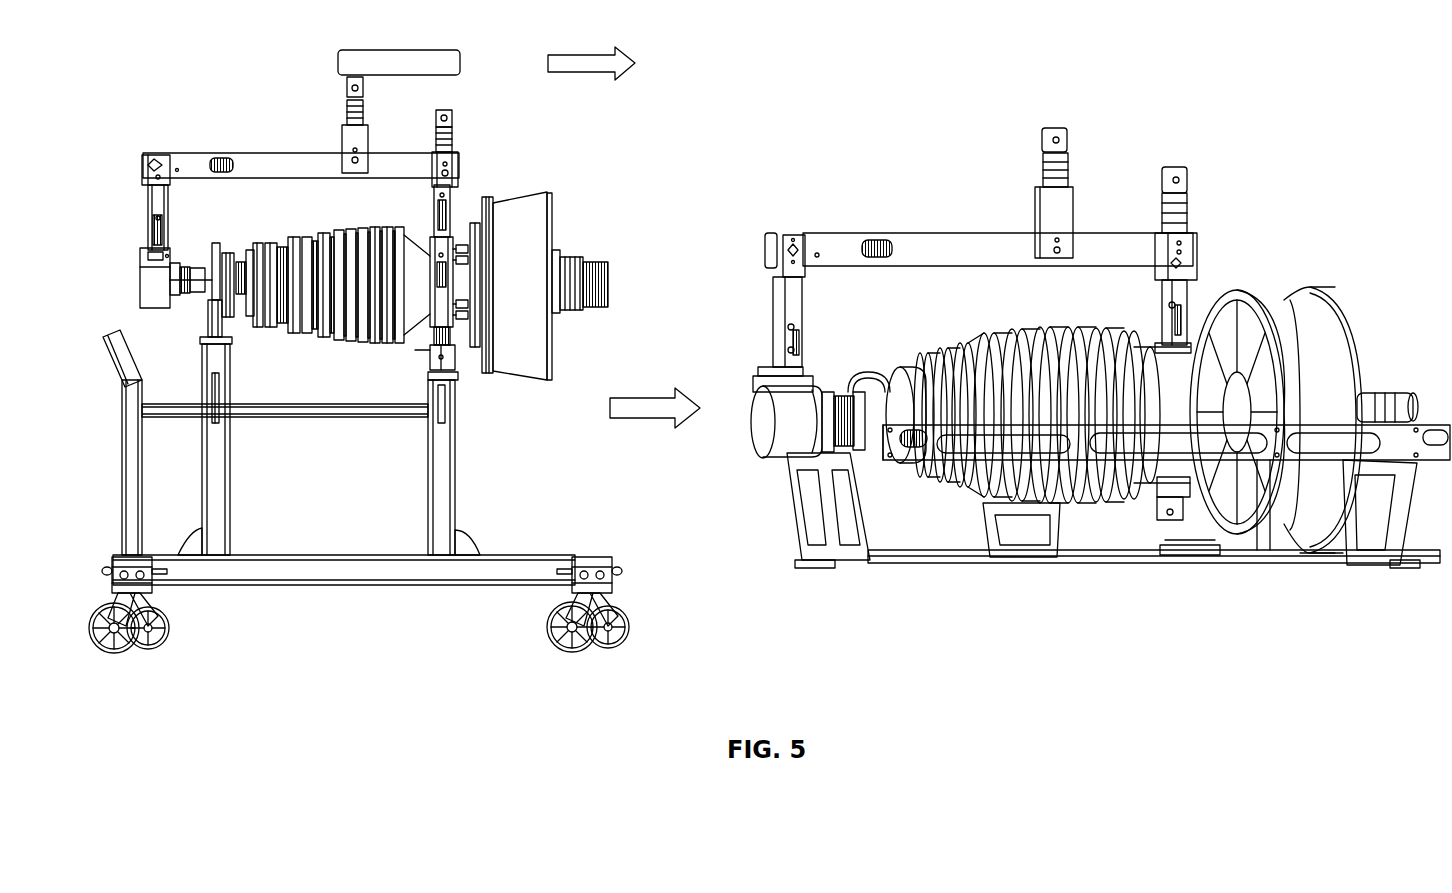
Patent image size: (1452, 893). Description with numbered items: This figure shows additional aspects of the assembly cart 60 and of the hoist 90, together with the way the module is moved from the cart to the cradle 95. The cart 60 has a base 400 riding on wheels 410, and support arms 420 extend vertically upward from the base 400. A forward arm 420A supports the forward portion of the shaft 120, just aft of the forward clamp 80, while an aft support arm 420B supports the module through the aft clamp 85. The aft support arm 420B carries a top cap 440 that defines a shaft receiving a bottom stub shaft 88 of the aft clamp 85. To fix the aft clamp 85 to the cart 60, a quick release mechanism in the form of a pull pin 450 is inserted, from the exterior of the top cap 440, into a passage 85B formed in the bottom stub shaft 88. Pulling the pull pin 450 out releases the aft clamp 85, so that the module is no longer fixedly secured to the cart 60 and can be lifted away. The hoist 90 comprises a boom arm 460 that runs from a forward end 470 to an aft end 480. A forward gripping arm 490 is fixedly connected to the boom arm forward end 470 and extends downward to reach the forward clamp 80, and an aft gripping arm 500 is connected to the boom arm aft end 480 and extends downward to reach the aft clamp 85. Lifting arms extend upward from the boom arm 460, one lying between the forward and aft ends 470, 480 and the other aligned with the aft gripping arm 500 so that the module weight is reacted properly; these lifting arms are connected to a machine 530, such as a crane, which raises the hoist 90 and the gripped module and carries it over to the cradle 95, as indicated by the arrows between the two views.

The assembly cart 60 is at (455, 435).
The forward clamp 80 is at (160, 292).
The aft clamp 85 is at (438, 244).
The passage 85B is at (1170, 518).
The bottom stub shaft 88 is at (1190, 548).
The hoist 90 is at (162, 156).
The cradle 95 is at (968, 565).
The shaft 120 is at (192, 312).
The base 400 is at (312, 573).
The wheels 410 is at (573, 654).
The support arms 420 is at (455, 488).
The forward arm 420A is at (222, 500).
The aft support arm 420B is at (430, 468).
The top cap 440 is at (435, 345).
The pull pin 450 is at (450, 372).
The boom arm 460 is at (226, 153).
The boom arm forward end 470 is at (142, 170).
The boom arm aft end 480 is at (458, 163).
The forward gripping arm 490 is at (150, 213).
The aft gripping arm 500 is at (452, 195).
The machine 530 is at (460, 64).